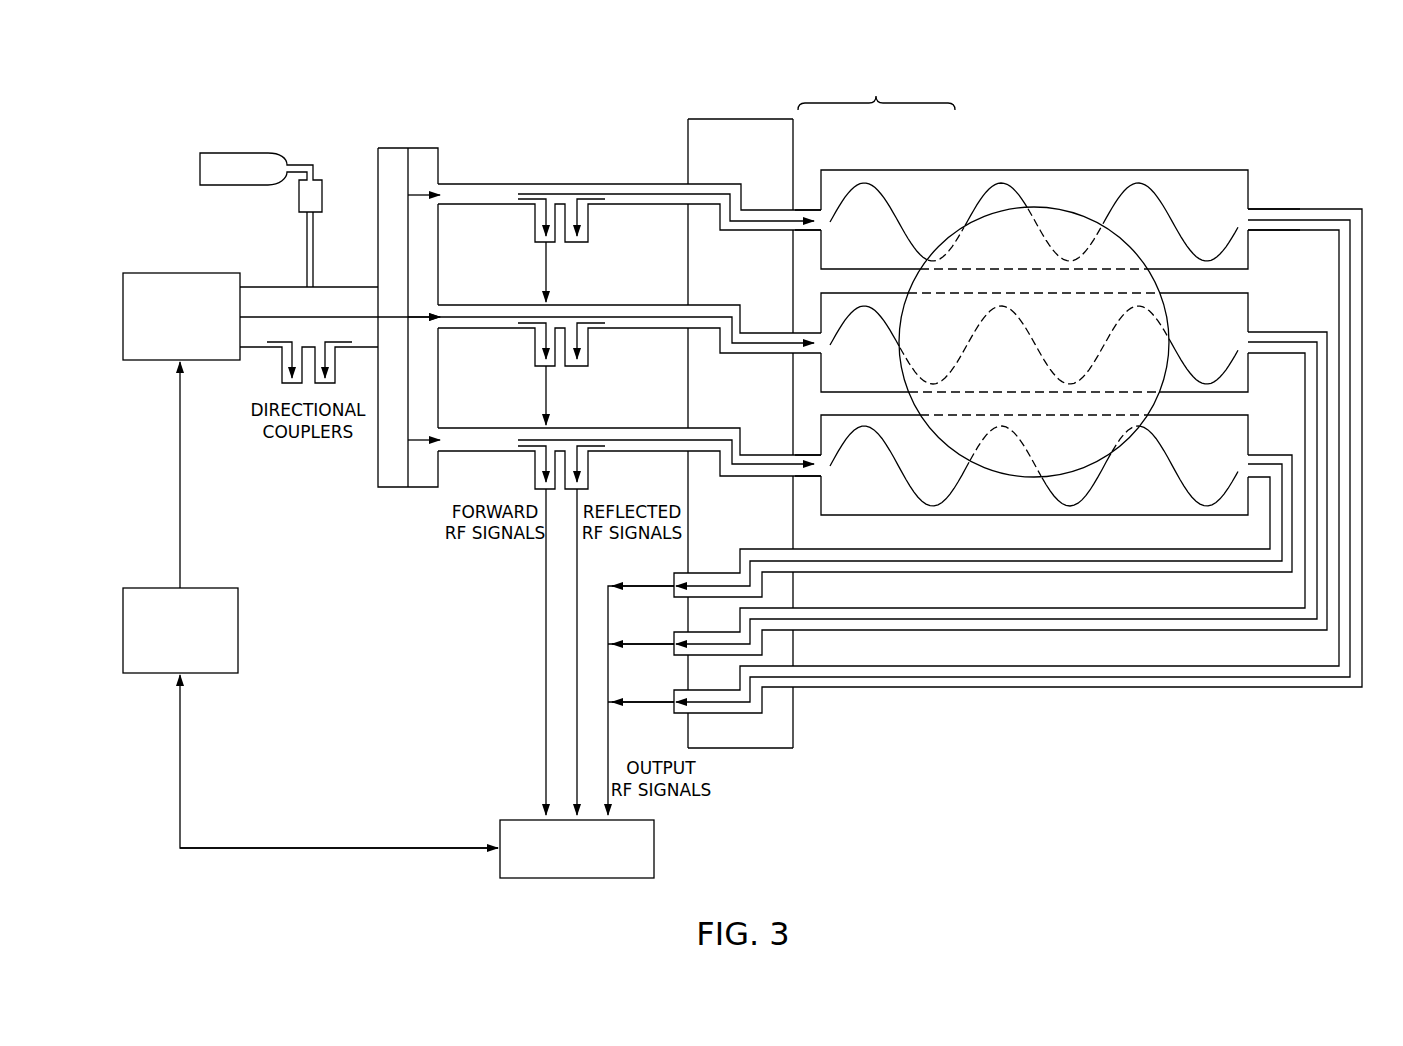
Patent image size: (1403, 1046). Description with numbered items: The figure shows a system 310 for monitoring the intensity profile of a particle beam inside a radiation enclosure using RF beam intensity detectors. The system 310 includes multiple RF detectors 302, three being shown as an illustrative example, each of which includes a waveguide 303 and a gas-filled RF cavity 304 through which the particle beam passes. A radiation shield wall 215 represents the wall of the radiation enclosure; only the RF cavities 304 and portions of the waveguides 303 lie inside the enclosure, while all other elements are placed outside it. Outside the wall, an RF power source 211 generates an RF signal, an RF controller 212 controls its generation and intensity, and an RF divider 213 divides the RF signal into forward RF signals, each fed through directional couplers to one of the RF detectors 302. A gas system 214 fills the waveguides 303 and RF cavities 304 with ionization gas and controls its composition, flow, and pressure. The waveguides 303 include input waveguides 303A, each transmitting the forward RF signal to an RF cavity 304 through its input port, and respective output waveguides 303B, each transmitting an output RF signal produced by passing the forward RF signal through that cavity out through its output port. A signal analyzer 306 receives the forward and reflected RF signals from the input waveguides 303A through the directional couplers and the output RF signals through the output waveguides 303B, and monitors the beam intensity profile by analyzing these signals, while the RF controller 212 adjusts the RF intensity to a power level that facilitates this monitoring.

The RF power source 211 is at (182, 272).
The RF controller 212 is at (240, 628).
The RF divider 213 is at (441, 164).
The gas system 214 is at (236, 186).
The radiation shield wall 215 is at (687, 146).
The RF detectors 302 is at (876, 89).
The waveguide 303 is at (803, 206).
The input waveguide 303A is at (805, 480).
The output waveguide 303B is at (1306, 206).
The RF cavity 304 is at (897, 168).
The signal analyzer 306 is at (656, 848).
The system 310 is at (1087, 298).